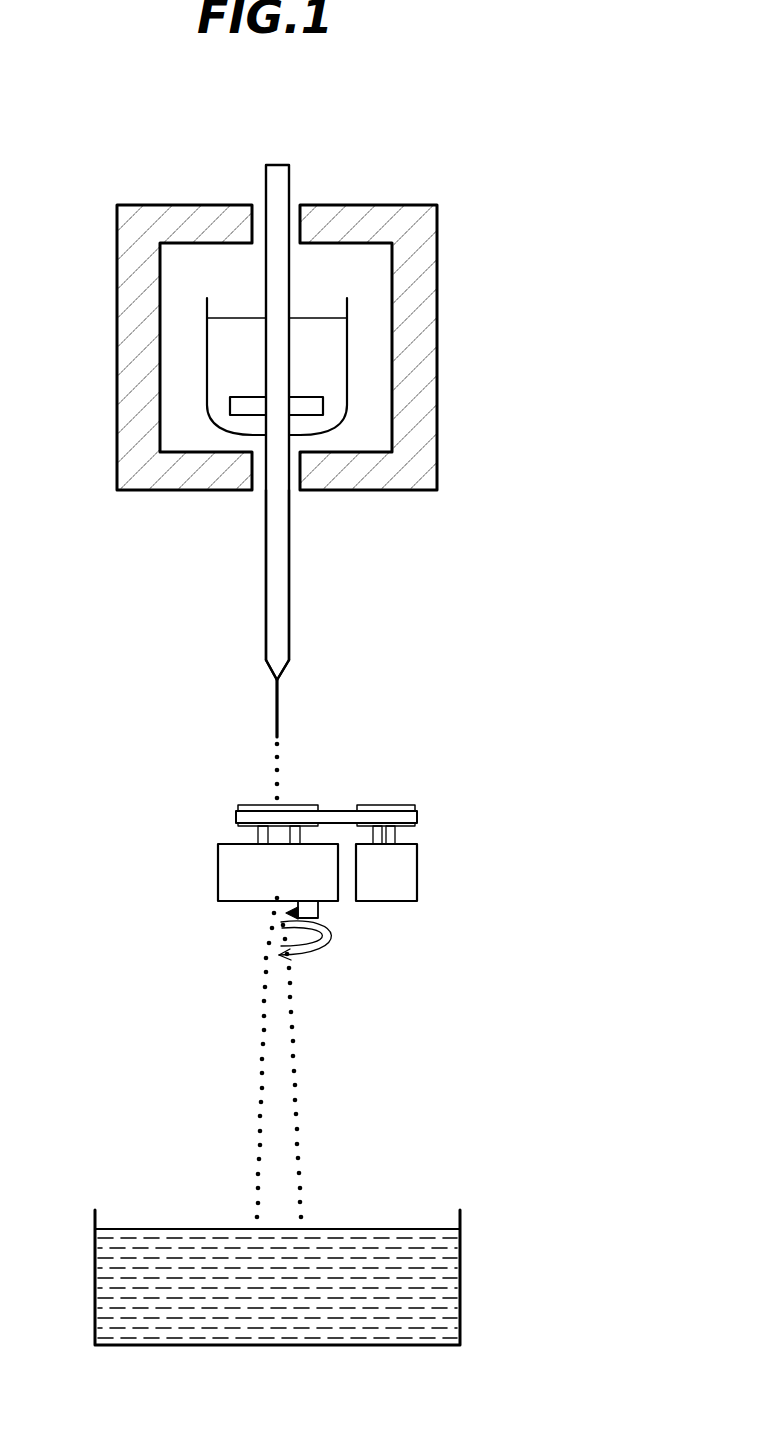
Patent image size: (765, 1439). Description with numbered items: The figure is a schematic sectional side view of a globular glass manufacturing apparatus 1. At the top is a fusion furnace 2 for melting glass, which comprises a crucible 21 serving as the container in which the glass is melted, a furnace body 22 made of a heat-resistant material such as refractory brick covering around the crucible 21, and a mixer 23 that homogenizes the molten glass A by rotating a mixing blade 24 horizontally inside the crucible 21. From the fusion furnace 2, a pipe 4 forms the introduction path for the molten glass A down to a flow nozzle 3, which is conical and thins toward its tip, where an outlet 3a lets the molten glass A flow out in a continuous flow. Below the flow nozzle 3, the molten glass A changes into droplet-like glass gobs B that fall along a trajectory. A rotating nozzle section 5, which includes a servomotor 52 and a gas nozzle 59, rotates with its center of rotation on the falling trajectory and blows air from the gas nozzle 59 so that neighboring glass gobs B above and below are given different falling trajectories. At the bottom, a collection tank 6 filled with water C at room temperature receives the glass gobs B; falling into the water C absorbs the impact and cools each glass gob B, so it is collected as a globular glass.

The globular glass manufacturing apparatus 1 is at (292, 132).
The fusion furnace 2 is at (301, 347).
The crucible 21 is at (333, 402).
The furnace body 22 is at (422, 456).
The mixer 23 is at (285, 178).
The mixing blade 24 is at (232, 414).
The flow nozzle 3 is at (288, 660).
The outlet 3a is at (280, 681).
The pipe 4 is at (292, 568).
The rotating nozzle section 5 is at (380, 882).
The servomotor 52 is at (405, 887).
The gas nozzle 59 is at (318, 912).
The collection tank 6 is at (333, 1253).
The molten glass A is at (333, 346).
The glass gob B is at (280, 770).
The water C is at (408, 1247).